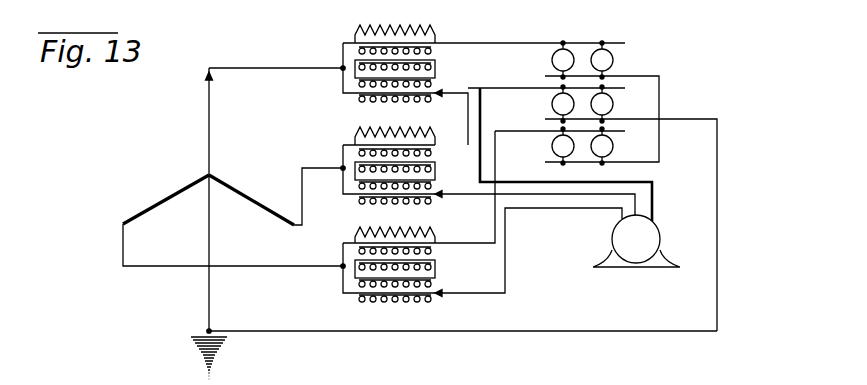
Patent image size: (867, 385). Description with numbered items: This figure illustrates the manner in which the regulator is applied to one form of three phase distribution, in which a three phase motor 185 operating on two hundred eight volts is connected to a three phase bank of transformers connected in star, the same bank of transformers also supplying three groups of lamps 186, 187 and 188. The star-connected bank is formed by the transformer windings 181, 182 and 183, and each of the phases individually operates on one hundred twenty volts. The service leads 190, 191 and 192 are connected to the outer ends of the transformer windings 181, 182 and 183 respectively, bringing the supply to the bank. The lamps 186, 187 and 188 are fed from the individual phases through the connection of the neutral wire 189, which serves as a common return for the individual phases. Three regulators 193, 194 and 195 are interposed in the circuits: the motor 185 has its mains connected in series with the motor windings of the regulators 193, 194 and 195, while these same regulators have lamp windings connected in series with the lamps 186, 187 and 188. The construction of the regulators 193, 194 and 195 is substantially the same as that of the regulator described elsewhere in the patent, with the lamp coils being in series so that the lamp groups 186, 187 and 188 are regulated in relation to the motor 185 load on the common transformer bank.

The transformer winding 181 is at (207, 123).
The transformer winding 182 is at (165, 195).
The transformer winding 183 is at (232, 178).
The three phase motor 185 is at (645, 241).
The group of lamps 186 is at (613, 58).
The group of lamps 187 is at (613, 103).
The group of lamps 188 is at (613, 144).
The neutral wire 189 is at (412, 333).
The service lead 190 is at (306, 44).
The service lead 191 is at (331, 143).
The service lead 192 is at (318, 242).
The regulator 193 is at (505, 35).
The regulator 194 is at (458, 130).
The regulator 195 is at (478, 230).